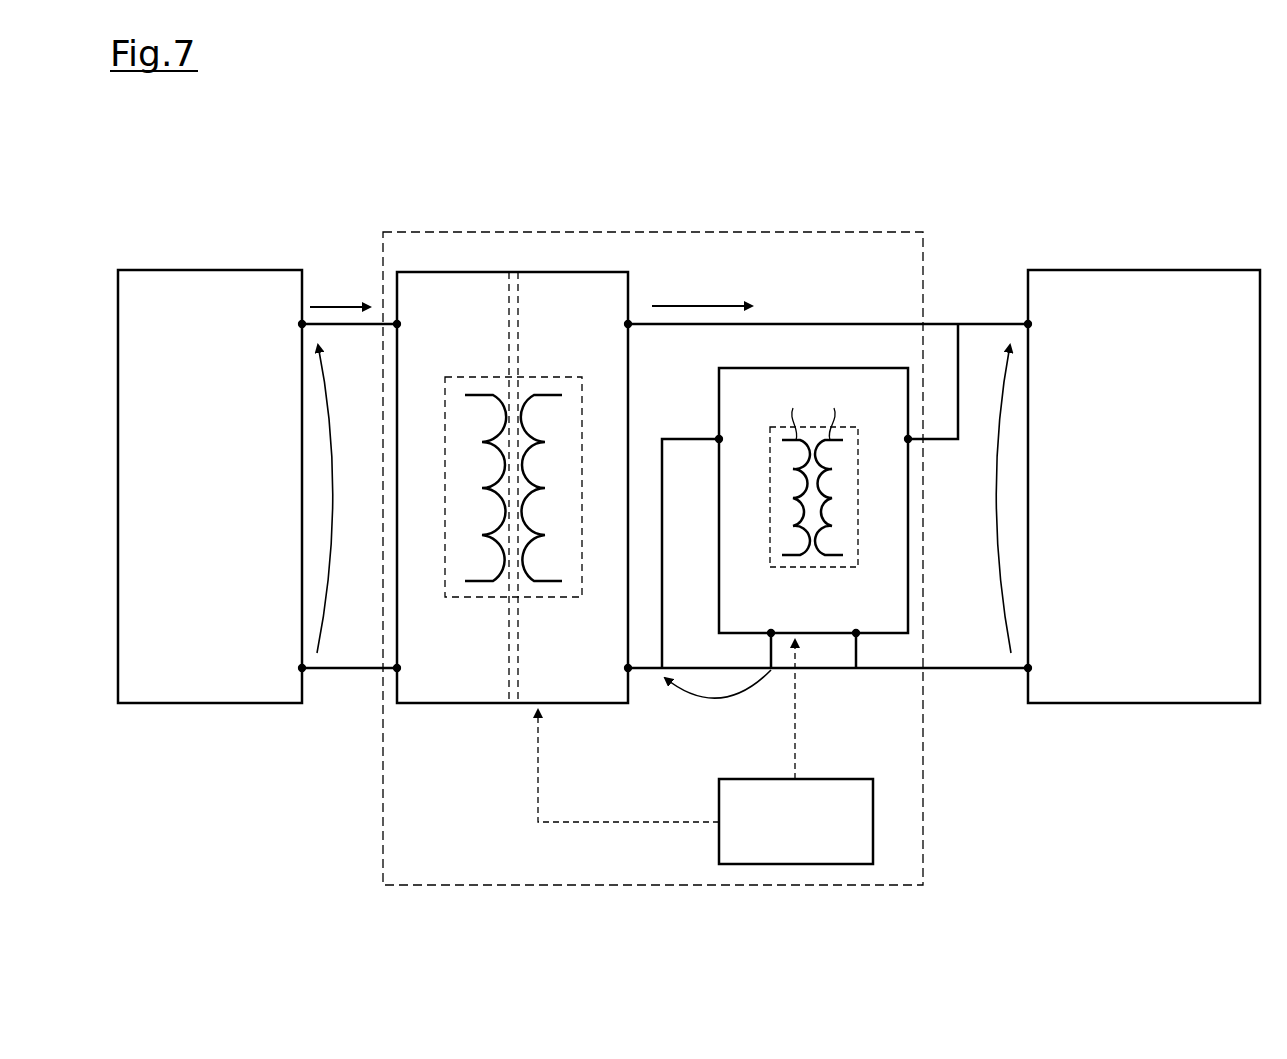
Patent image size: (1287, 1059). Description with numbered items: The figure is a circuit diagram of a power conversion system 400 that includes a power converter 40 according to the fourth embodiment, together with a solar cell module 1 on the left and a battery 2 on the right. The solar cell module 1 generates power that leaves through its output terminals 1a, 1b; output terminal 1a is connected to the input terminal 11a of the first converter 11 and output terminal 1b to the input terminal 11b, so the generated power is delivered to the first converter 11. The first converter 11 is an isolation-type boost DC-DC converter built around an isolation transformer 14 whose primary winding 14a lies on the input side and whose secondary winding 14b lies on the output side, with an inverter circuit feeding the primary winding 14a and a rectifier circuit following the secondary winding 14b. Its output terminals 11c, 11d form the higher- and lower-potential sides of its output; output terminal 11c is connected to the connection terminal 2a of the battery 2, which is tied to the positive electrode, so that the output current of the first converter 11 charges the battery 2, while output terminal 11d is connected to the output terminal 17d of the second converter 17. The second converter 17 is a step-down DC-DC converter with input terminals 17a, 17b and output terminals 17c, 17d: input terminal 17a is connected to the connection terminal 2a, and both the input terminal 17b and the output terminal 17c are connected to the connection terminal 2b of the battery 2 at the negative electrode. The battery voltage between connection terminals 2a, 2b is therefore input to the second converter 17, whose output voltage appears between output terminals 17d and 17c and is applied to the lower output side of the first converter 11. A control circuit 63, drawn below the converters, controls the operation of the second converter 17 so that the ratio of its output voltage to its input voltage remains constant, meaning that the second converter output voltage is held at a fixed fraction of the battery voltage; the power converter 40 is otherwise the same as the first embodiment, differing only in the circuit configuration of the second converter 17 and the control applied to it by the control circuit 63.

The power conversion system 400 is at (1103, 135).
The solar cell module 1 is at (203, 270).
The output terminal 1a is at (299, 324).
The output terminal 1b is at (299, 668).
The battery 2 is at (1172, 270).
The connection terminal 2a is at (1031, 324).
The connection terminal 2b is at (1031, 668).
The power converter 40 is at (727, 232).
The first converter 11 is at (537, 272).
The input terminal 11a is at (400, 324).
The input terminal 11b is at (400, 668).
The output terminal 11c is at (625, 324).
The output terminal 11d is at (625, 668).
The isolation transformer 14 is at (557, 467).
The primary winding 14a is at (468, 395).
The secondary winding 14b is at (560, 395).
The second converter 17 is at (810, 368).
The input terminal 17a is at (911, 441).
The input terminal 17b is at (854, 630).
The output terminal 17c is at (769, 630).
The output terminal 17d is at (716, 441).
The control circuit 63 is at (848, 779).